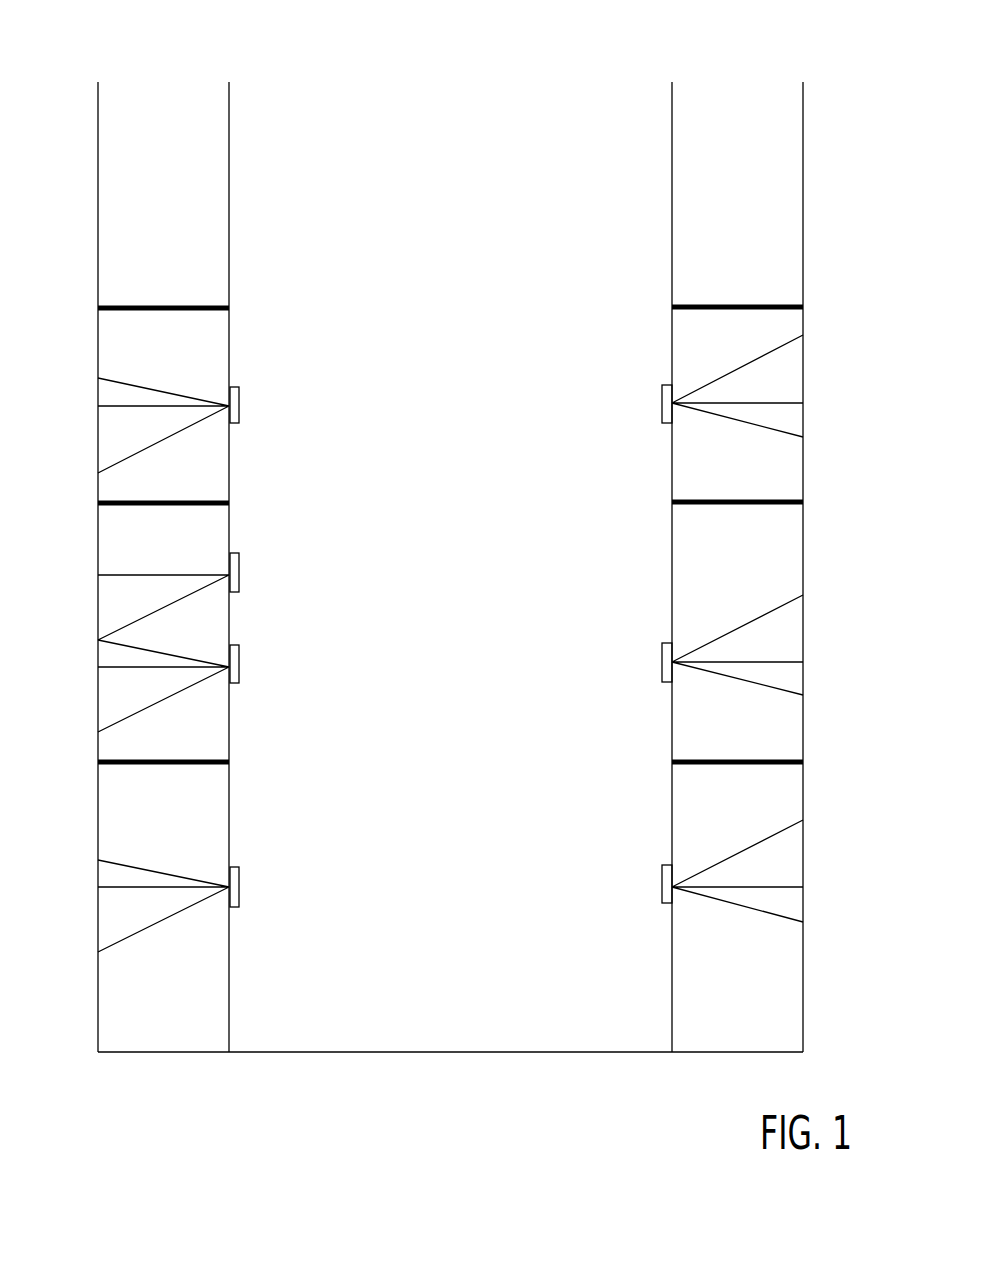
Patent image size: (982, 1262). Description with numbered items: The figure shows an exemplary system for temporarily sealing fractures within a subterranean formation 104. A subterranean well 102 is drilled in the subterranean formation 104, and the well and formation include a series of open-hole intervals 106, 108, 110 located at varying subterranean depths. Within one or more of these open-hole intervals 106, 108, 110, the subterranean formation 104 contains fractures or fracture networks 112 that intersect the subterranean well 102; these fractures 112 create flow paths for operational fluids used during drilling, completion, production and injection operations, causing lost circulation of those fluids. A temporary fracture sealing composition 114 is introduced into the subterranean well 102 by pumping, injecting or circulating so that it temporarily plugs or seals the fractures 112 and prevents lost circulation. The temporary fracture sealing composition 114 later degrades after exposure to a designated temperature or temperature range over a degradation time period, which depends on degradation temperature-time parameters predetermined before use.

The subterranean well 102 is at (425, 529).
The subterranean formation 104 is at (80, 180).
The open-hole interval 106 is at (98, 355).
The open-hole interval 108 is at (98, 540).
The open-hole interval 110 is at (99, 788).
The fractures 112 is at (163, 443).
The temporary fracture sealing composition 114 is at (243, 407).